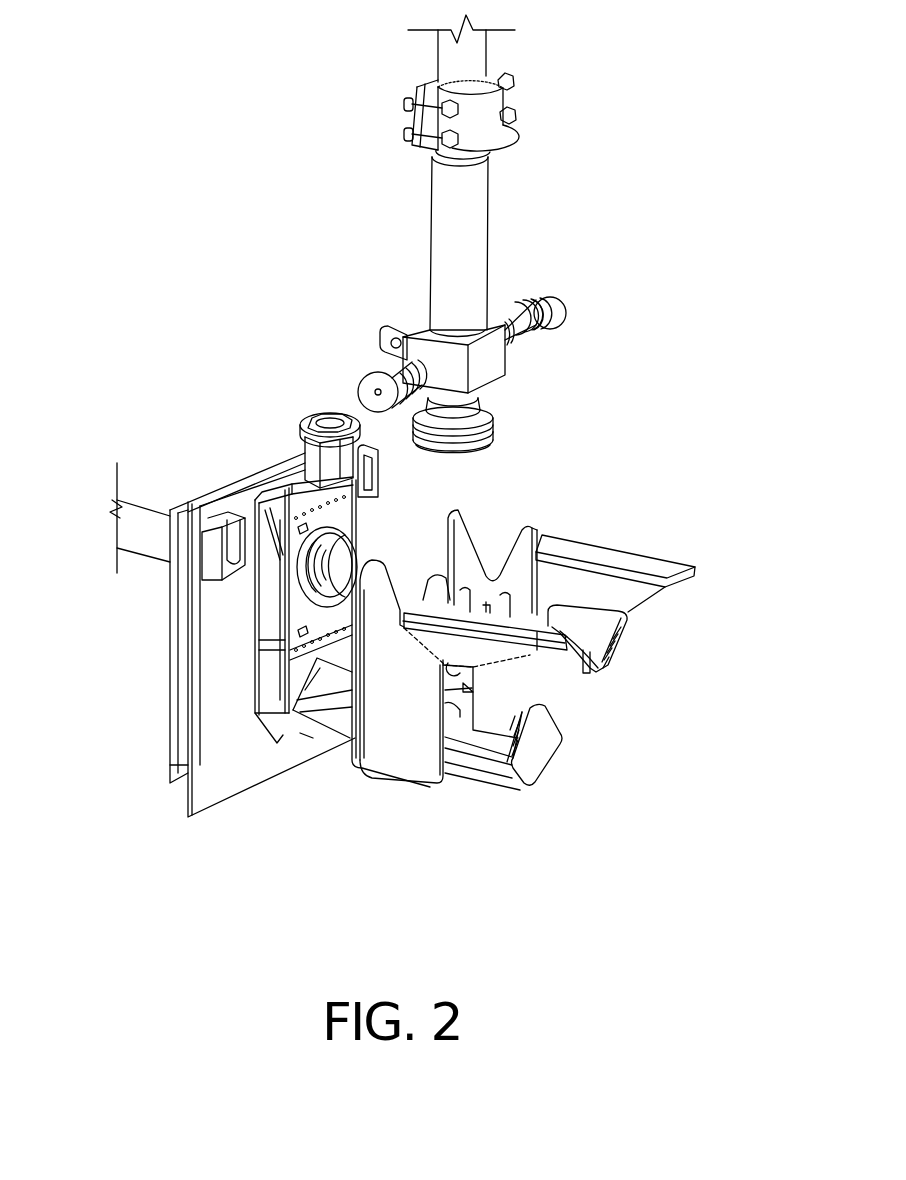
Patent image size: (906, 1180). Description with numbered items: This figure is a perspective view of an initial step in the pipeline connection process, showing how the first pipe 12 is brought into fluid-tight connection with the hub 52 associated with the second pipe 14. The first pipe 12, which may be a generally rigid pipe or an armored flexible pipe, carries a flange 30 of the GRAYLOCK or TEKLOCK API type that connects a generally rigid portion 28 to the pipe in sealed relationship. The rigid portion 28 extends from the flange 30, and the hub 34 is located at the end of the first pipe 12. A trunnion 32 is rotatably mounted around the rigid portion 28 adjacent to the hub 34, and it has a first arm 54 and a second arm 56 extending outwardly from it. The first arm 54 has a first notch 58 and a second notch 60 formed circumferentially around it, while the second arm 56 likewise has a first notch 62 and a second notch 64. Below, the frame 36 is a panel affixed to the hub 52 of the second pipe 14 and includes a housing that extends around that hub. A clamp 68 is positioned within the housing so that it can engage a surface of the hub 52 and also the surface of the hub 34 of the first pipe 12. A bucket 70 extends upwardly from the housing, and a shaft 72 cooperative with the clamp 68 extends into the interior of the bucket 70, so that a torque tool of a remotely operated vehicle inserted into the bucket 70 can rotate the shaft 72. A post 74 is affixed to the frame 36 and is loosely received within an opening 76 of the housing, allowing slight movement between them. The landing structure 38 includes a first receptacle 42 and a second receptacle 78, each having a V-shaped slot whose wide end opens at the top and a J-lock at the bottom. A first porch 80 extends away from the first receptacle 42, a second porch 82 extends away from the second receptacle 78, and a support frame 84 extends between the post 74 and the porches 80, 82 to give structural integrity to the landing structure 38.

The first pipe 12 is at (488, 38).
The second pipe 14 is at (140, 495).
The rigid portion 28 is at (487, 205).
The flange 30 is at (512, 110).
The trunnion 32 is at (497, 378).
The hub 34 is at (490, 437).
The frame 36 is at (225, 788).
The landing structure 38 is at (580, 503).
The first receptacle 42 is at (388, 577).
The hub 52 is at (337, 548).
The first arm 54 is at (355, 378).
The second arm 56 is at (513, 342).
The first notch 58 is at (402, 328).
The second notch 60 is at (386, 364).
The first notch 62 is at (497, 303).
The second notch 64 is at (522, 300).
The clamp 68 is at (268, 593).
The bucket 70 is at (312, 465).
The shaft 72 is at (320, 425).
The post 74 is at (545, 768).
The opening 76 is at (318, 745).
The second receptacle 78 is at (478, 530).
The first porch 80 is at (543, 633).
The second porch 82 is at (638, 559).
The support frame 84 is at (548, 693).